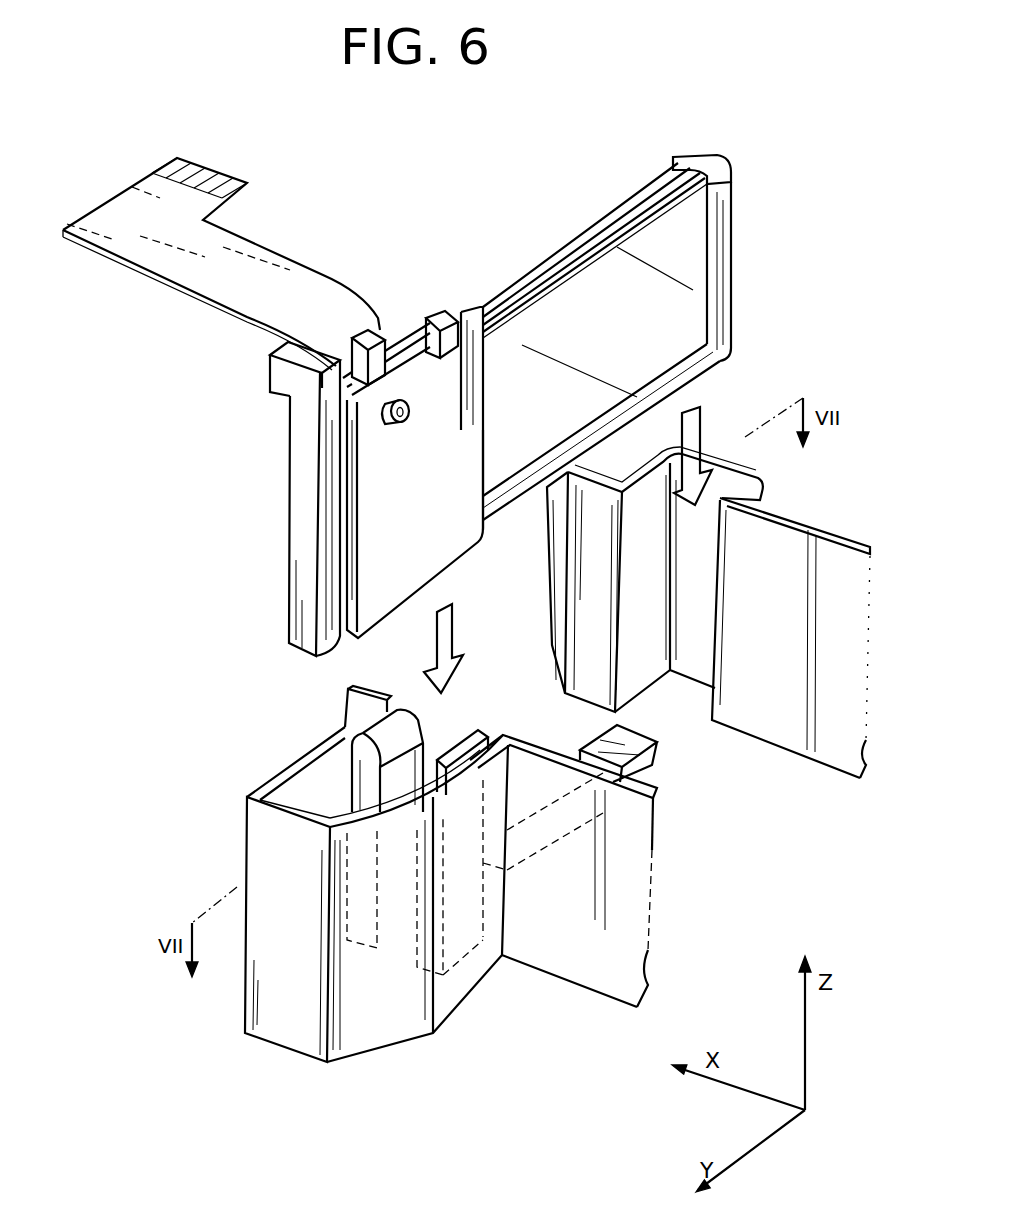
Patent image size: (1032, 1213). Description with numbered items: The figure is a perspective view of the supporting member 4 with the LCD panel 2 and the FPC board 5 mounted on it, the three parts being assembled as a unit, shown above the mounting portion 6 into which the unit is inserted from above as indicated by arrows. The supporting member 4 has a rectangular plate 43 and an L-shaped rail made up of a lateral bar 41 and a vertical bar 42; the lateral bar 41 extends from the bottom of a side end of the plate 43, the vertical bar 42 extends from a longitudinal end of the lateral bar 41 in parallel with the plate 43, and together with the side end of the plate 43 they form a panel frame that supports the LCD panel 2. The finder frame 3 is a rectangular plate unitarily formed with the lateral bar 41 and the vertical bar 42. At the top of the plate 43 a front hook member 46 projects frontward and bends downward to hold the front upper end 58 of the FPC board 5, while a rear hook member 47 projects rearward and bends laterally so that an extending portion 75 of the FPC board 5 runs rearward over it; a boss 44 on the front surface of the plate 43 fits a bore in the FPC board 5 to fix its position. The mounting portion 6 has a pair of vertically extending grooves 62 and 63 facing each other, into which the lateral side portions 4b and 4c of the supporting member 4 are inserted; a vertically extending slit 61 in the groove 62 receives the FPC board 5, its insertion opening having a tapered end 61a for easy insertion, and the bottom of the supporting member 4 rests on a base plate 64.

The LCD panel 2 is at (607, 293).
The finder frame 3 is at (594, 247).
The supporting member 4 is at (733, 250).
The lateral side portion 4b is at (302, 568).
The lateral side portion 4c is at (718, 142).
The FPC board 5 is at (450, 548).
The mounting portion 6 is at (824, 508).
The lateral bar 41 is at (692, 373).
The vertical bar 42 is at (722, 324).
The rectangular plate 43 is at (330, 466).
The boss 44 is at (384, 428).
The front hook member 46 is at (433, 320).
The rear hook member 47 is at (290, 350).
The front upper end 58 is at (466, 313).
The slit 61 is at (359, 780).
The tapered end 61a is at (372, 733).
The groove 62 is at (260, 860).
The groove 63 is at (740, 470).
The base plate 64 is at (655, 765).
The flexible cable 75 is at (218, 288).